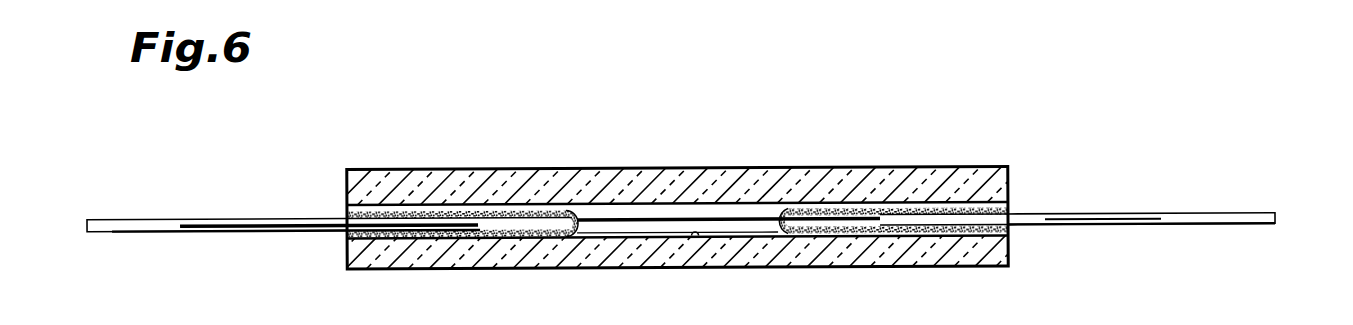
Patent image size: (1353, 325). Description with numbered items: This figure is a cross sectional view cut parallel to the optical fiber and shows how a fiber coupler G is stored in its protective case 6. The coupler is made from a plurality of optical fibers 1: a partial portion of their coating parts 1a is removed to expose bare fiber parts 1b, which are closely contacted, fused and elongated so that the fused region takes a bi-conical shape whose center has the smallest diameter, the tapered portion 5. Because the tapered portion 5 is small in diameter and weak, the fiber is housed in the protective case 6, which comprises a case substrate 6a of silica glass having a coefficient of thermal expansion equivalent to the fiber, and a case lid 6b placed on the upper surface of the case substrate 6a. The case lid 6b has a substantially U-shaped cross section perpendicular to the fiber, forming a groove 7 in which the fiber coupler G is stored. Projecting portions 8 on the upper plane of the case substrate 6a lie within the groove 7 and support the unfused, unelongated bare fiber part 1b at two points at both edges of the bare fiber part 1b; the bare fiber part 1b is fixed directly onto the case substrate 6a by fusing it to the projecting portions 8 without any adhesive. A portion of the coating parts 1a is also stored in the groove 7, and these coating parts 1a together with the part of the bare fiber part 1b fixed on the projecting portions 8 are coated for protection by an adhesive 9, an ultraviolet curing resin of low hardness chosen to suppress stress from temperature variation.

The optical fiber 1 is at (207, 217).
The coating part 1a is at (398, 222).
The bare fiber part 1b is at (717, 218).
The tapered portion 5 is at (622, 222).
The protective case 6 is at (635, 160).
The case substrate 6a is at (960, 253).
The case lid 6b is at (950, 173).
The groove 7 is at (693, 236).
The projecting portion 8 is at (417, 163).
The adhesive 9 is at (453, 213).
The fiber coupler G is at (772, 208).